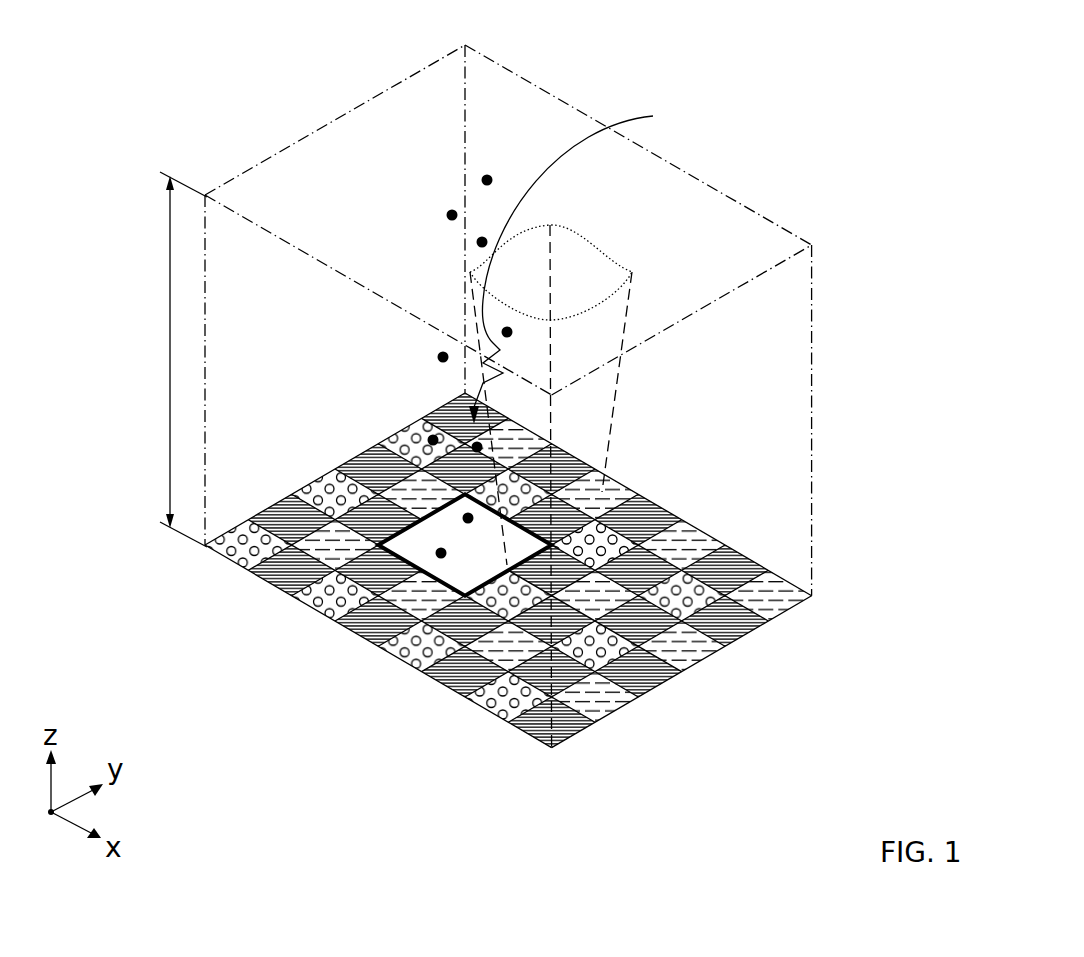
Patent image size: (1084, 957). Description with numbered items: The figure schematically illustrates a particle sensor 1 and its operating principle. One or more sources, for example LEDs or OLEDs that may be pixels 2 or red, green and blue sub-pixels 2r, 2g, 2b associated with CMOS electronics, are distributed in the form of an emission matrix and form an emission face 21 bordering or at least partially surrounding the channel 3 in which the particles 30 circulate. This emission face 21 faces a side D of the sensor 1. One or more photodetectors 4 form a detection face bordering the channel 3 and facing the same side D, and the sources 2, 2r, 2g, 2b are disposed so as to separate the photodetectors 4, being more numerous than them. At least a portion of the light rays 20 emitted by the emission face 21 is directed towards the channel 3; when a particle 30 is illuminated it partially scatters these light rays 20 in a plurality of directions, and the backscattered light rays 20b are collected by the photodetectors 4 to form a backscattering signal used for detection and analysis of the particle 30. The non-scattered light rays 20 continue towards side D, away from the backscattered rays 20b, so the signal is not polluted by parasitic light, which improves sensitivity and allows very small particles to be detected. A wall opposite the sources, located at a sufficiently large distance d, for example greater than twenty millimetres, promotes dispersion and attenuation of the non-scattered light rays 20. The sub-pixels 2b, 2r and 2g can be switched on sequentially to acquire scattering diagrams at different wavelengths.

The sensor 1 is at (736, 423).
The pixels 2 is at (681, 595).
The red sub-pixels 2r is at (735, 570).
The green sub-pixels 2g is at (768, 590).
The blue sub-pixels 2b is at (737, 624).
The channel 3 is at (428, 530).
The photodetectors 4 is at (238, 565).
The light rays 20 is at (633, 297).
The backscattered light rays 20b is at (587, 262).
The emission face 21 is at (908, 498).
The particles 30 is at (452, 215).
The distance d is at (177, 359).
The side of the sensor D is at (736, 252).